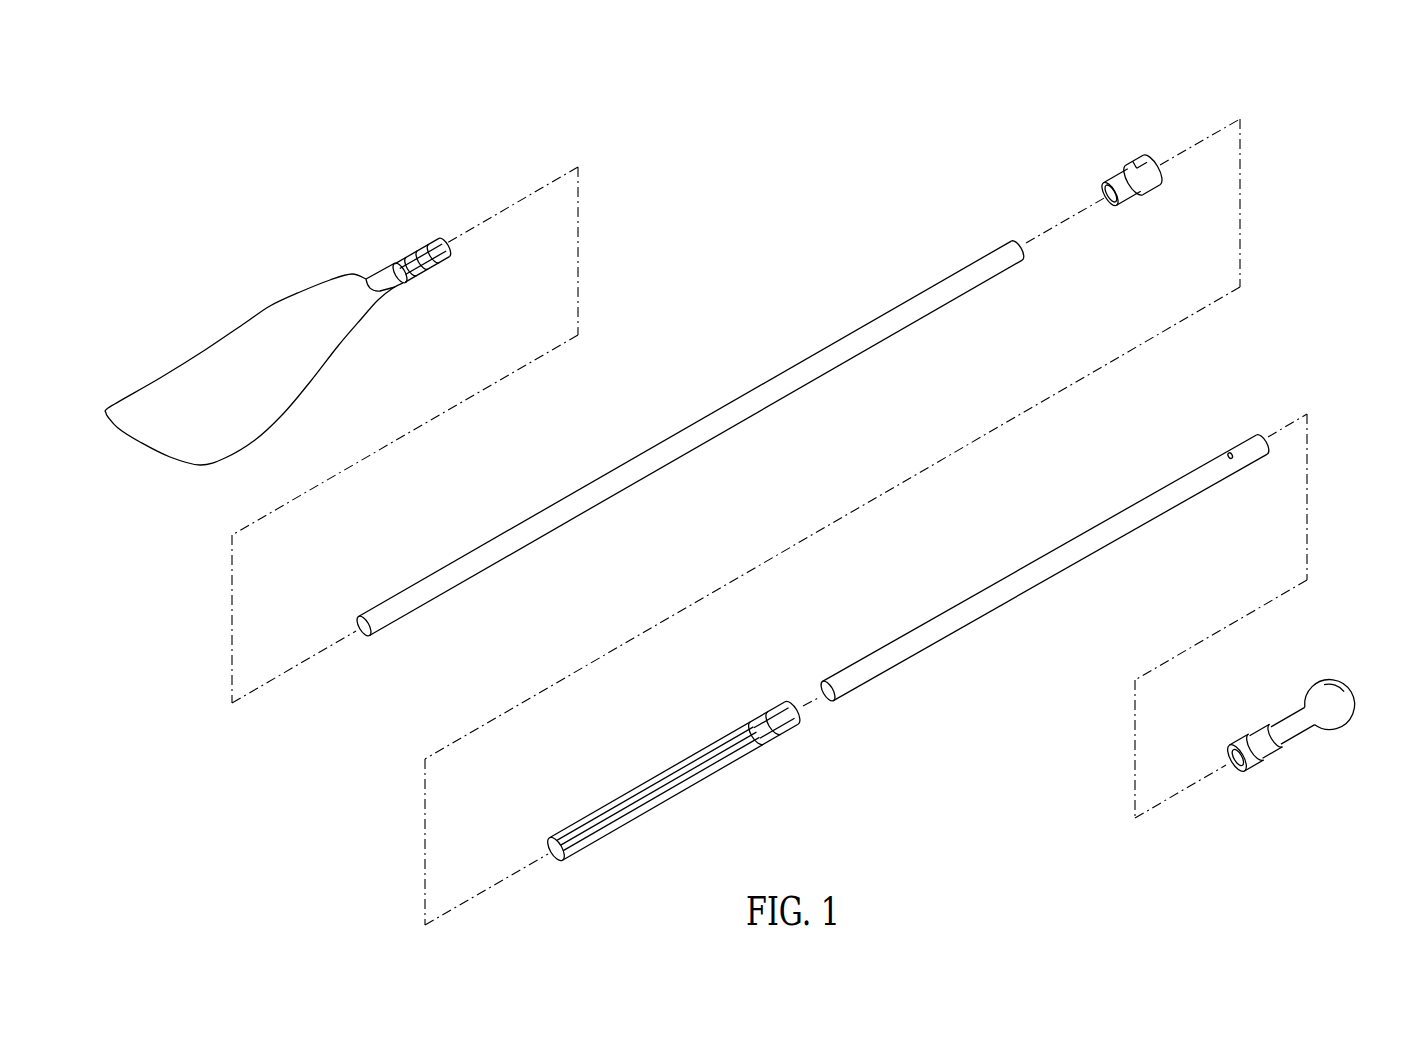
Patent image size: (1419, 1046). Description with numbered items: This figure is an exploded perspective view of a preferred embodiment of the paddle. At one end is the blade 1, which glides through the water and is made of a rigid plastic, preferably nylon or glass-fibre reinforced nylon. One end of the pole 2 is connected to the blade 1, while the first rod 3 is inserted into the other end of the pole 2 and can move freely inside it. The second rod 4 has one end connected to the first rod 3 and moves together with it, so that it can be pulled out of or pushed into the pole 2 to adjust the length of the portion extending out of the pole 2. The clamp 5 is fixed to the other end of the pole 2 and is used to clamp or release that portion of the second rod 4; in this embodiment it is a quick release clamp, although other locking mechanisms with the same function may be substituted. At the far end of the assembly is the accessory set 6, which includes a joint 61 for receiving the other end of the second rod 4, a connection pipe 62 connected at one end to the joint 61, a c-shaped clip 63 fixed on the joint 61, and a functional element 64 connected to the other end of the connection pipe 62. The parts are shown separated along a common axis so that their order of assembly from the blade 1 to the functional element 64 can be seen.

The blade 1 is at (217, 363).
The pole 2 is at (725, 418).
The first rod 3 is at (715, 762).
The second rod 4 is at (1000, 597).
The clamp 5 is at (1120, 152).
The accessory set 6 is at (1296, 715).
The joint 61 is at (1263, 737).
The connection pipe 62 is at (1288, 735).
The c-shaped clip 63 is at (1238, 743).
The functional element 64 is at (1333, 700).